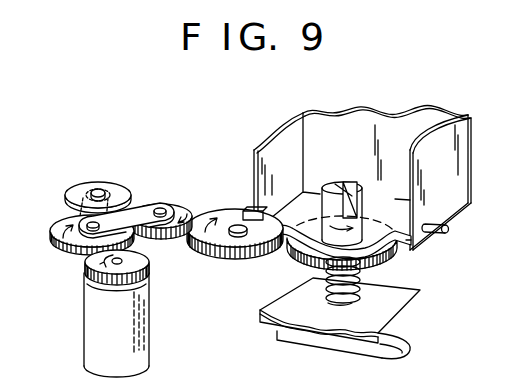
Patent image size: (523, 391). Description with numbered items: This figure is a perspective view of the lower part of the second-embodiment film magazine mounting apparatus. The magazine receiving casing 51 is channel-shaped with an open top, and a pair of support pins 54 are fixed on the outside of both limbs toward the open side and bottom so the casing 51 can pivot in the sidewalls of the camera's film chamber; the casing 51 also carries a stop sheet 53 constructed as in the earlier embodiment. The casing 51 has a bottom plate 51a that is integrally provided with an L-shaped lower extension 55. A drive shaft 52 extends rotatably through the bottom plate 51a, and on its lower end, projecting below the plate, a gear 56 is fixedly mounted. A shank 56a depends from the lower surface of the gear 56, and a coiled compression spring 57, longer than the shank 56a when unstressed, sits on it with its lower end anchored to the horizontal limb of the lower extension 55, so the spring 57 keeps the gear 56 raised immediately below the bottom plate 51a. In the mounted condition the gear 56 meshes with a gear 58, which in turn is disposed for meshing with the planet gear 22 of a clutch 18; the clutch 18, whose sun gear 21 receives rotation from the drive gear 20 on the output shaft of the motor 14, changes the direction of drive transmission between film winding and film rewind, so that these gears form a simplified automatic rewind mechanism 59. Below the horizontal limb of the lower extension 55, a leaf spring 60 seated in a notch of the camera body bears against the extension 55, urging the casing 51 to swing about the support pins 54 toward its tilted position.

The motor 14 is at (141, 321).
The clutch 18 is at (115, 194).
The drive gear 20 is at (143, 264).
The sun gear 21 is at (60, 248).
The planet gear 22 is at (78, 188).
The magazine receiving casing 51 is at (463, 144).
The bottom plate 51a is at (260, 257).
The drive shaft 52 is at (352, 186).
The stop sheet 53 is at (410, 246).
The support pins 54 is at (246, 211).
The L-shaped lower extension 55 is at (413, 304).
The gear 56 is at (366, 262).
The shank 56a is at (357, 292).
The coiled compression spring 57 is at (326, 290).
The gear 58 is at (218, 251).
The automatic rewind mechanism 59 is at (212, 311).
The leaf spring 60 is at (396, 340).